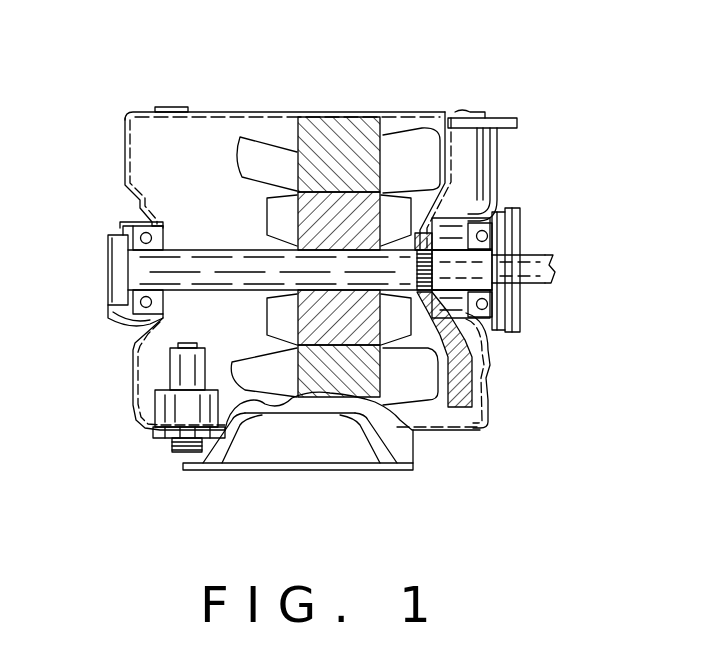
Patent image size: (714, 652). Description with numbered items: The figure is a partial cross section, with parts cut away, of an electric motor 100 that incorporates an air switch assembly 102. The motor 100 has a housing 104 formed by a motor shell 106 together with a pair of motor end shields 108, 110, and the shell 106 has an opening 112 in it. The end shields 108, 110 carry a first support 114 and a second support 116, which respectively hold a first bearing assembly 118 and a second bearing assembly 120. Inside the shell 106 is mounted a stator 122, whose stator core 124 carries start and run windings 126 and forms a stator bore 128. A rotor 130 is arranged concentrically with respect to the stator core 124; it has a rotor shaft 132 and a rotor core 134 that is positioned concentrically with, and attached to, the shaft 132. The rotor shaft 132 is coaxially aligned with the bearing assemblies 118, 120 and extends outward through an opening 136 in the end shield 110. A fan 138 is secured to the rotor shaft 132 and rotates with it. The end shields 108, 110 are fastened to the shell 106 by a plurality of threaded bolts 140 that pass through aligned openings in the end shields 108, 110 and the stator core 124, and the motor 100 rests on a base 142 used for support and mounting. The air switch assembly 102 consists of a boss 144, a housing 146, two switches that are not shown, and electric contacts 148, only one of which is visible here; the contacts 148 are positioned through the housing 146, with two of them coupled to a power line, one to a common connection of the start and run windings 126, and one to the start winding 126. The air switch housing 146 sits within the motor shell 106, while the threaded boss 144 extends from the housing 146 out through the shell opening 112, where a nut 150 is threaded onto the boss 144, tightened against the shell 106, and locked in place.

The electric motor 100 is at (477, 87).
The air switch assembly 102 is at (136, 370).
The housing 104 is at (228, 100).
The motor shell 106 is at (350, 112).
The motor end shield 108 is at (125, 160).
The motor end shield 110 is at (495, 155).
The opening 112 is at (160, 440).
The first support 114 is at (108, 305).
The second support 116 is at (520, 327).
The first bearing assembly 118 is at (113, 240).
The second bearing assembly 120 is at (507, 198).
The stator 122 is at (218, 133).
The stator core 124 is at (420, 112).
The start and run windings 126 is at (240, 178).
The stator bore 128 is at (297, 192).
The rotor 130 is at (255, 303).
The rotor shaft 132 is at (150, 327).
The rotor core 134 is at (490, 345).
The opening 136 is at (520, 242).
The fan 138 is at (472, 430).
The threaded bolts 140 is at (508, 117).
The base 142 is at (397, 470).
The boss 144 is at (177, 455).
The housing 146 is at (170, 405).
The electric contacts 148 is at (172, 323).
The nut 150 is at (165, 445).